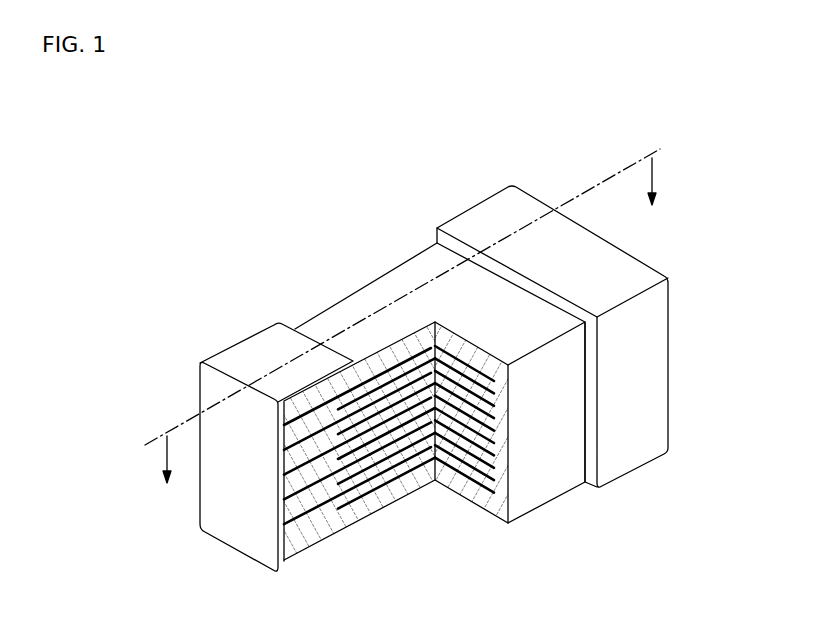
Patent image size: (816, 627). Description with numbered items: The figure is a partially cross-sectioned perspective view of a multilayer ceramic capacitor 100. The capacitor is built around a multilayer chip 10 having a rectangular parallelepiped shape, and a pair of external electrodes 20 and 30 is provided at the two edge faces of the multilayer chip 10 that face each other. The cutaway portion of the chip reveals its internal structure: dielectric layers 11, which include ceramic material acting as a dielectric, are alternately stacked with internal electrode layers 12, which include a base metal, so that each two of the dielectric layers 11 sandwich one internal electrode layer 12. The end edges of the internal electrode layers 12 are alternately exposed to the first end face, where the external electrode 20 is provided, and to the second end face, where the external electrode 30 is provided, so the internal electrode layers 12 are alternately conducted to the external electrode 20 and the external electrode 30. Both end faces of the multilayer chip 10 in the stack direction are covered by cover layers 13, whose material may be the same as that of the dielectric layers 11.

The multilayer ceramic capacitor 100 is at (750, 136).
The multilayer chip 10 is at (386, 407).
The dielectric layer 11 is at (373, 503).
The internal electrode layer 12 is at (350, 520).
The cover layer 13 is at (412, 275).
The external electrode 20 is at (247, 336).
The external electrode 30 is at (478, 218).